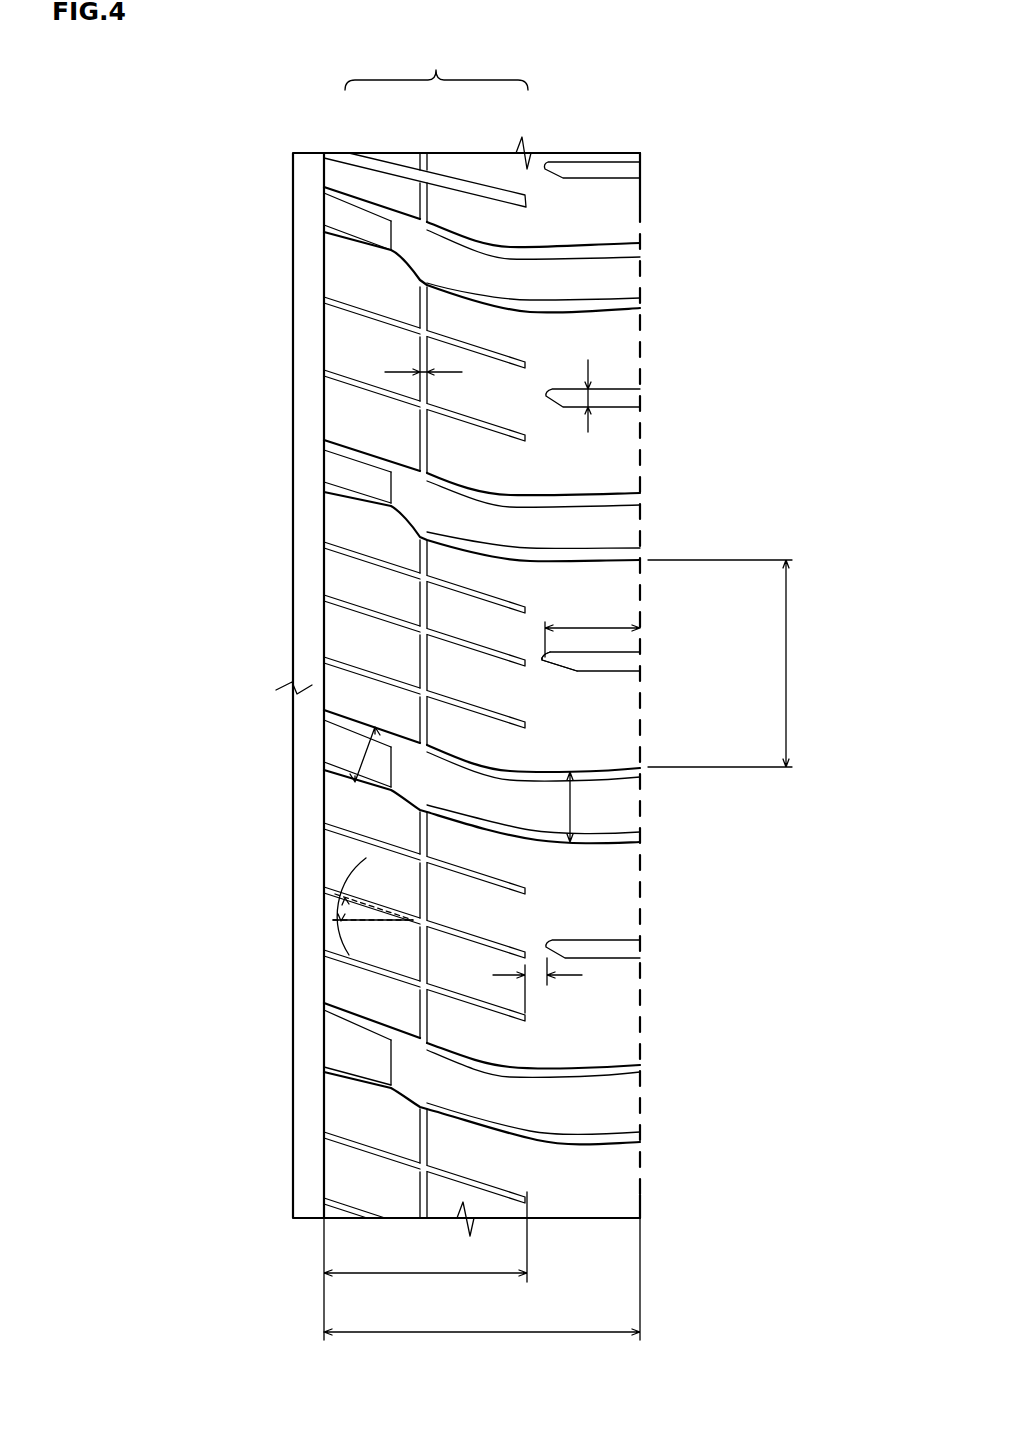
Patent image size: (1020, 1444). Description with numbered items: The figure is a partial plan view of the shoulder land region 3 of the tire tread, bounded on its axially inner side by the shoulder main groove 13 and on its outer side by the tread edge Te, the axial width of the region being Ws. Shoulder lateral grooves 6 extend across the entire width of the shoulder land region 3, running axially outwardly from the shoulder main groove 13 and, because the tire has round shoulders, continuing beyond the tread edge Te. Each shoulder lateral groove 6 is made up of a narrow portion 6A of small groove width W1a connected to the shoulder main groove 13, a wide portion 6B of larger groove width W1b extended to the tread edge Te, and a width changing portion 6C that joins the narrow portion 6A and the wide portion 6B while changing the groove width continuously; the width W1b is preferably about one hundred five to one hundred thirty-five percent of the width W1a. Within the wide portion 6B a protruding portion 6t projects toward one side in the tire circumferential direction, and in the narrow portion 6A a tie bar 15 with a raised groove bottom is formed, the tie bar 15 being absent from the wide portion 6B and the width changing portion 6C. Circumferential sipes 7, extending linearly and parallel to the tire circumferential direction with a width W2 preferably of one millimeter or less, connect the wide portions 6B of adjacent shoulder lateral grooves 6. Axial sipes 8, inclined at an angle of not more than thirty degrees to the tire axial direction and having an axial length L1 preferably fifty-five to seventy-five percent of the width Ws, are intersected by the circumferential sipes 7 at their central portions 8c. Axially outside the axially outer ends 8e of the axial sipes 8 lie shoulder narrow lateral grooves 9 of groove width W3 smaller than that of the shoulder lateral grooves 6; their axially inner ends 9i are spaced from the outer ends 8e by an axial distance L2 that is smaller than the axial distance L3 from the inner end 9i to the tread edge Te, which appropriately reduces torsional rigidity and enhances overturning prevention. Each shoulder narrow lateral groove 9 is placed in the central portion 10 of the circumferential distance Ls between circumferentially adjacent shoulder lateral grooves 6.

The shoulder land region 3 is at (594, 123).
The tread edge Te is at (641, 192).
The shoulder main groove 13 is at (312, 174).
The shoulder lateral groove 6 is at (238, 474).
The narrow portion 6A is at (356, 222).
The wide portion 6B is at (503, 275).
The width changing portion 6C is at (407, 243).
The protruding portion 6t is at (545, 318).
The circumferential sipe 7 is at (424, 443).
The axial sipe 8 is at (501, 871).
The central portion 8c is at (405, 645).
The axially outer end 8e is at (528, 1017).
The shoulder narrow lateral groove 9 is at (598, 960).
The axially inner end 9i is at (541, 661).
The central portion 10 is at (658, 668).
The tie bar 15 is at (353, 474).
The groove width of narrow portion W1a is at (362, 752).
The groove width of wide portion W1b is at (572, 810).
The width of circumferential sipe W2 is at (412, 366).
The groove width of shoulder narrow lateral groove W3 is at (592, 398).
The axial length of axial sipe L1 is at (425, 1266).
The axial distance L2 is at (540, 977).
The axial distance L3 is at (598, 625).
The circumferential distance Ls is at (737, 663).
The axial width of shoulder land region Ws is at (482, 1297).